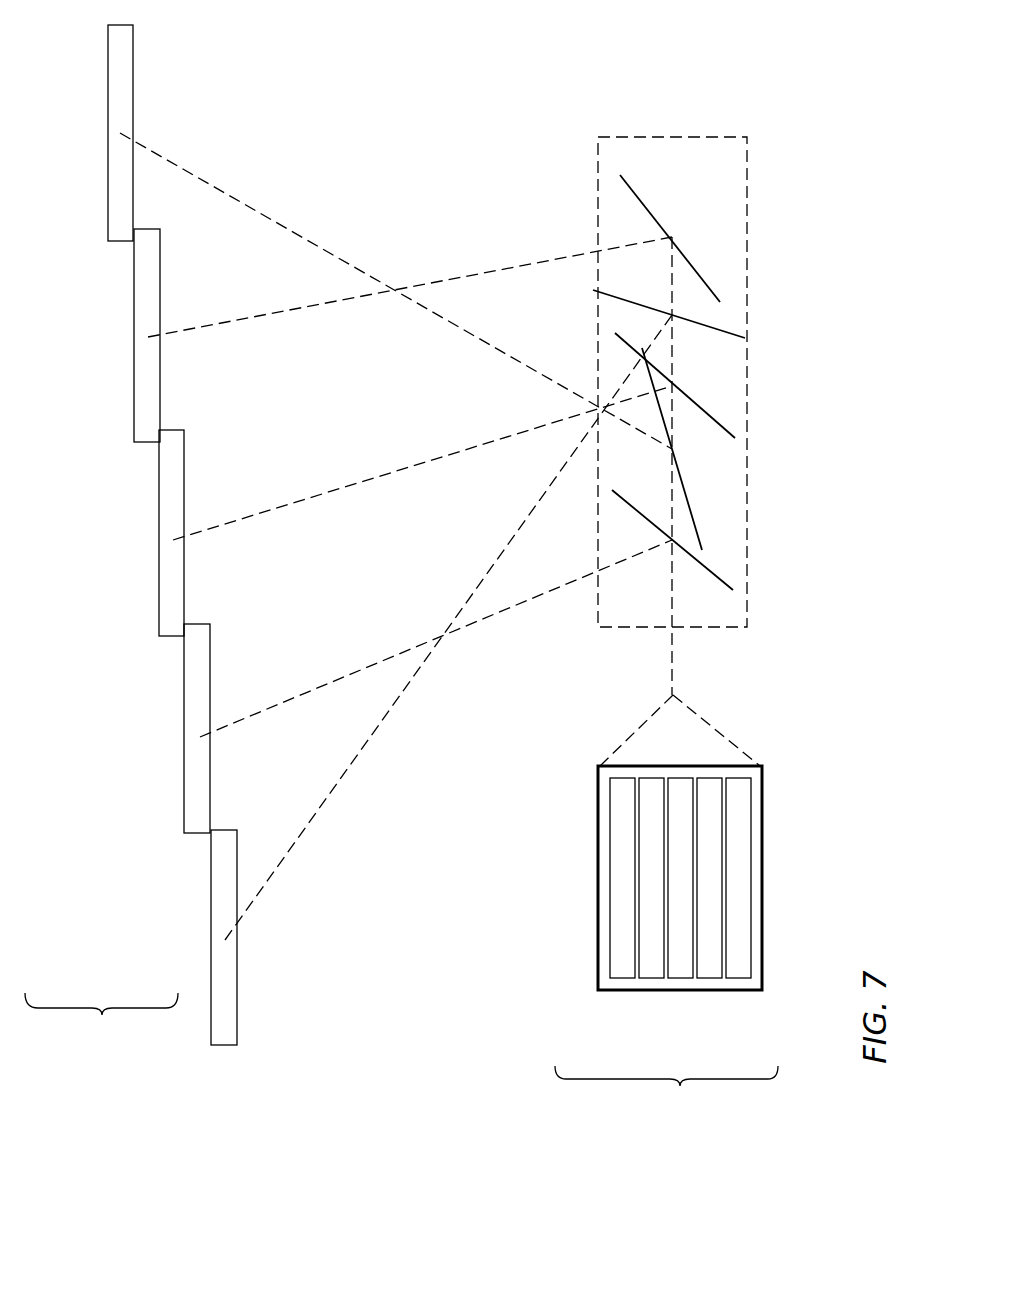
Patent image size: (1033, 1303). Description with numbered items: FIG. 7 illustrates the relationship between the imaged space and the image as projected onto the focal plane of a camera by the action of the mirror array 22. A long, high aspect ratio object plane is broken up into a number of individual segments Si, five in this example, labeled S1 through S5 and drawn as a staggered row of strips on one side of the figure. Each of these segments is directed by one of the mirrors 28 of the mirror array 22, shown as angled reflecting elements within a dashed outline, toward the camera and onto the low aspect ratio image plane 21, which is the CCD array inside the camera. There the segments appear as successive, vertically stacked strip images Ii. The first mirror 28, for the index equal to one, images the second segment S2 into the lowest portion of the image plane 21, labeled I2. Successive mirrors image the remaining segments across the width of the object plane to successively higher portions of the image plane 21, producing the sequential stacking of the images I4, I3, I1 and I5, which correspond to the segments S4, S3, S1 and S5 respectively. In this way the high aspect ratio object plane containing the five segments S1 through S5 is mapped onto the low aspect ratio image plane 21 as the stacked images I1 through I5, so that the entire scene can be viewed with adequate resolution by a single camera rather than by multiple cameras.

The first segment S1 is at (218, 912).
The second segment S2 is at (191, 711).
The third segment S3 is at (165, 513).
The fourth segment S4 is at (140, 318).
The fifth segment S5 is at (118, 97).
The individual segments Si is at (102, 1015).
The image plane 21 is at (652, 915).
The mirror array 22 is at (673, 408).
The mirror 28 is at (722, 580).
The first strip image I1 is at (658, 970).
The second strip image I2 is at (740, 970).
The third strip image I3 is at (685, 970).
The fourth strip image I4 is at (711, 970).
The fifth strip image I5 is at (622, 970).
The strip images Ii is at (680, 1086).